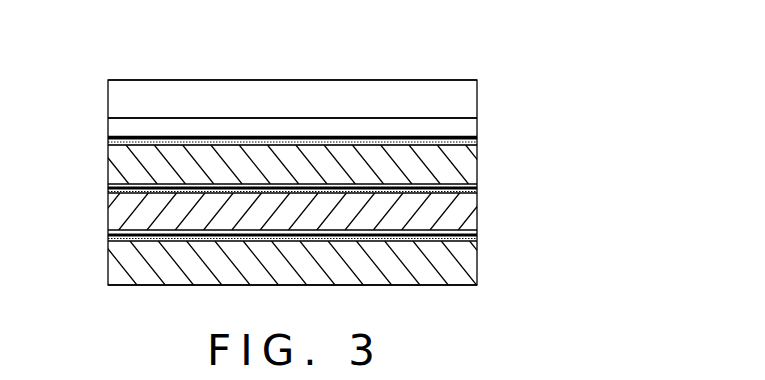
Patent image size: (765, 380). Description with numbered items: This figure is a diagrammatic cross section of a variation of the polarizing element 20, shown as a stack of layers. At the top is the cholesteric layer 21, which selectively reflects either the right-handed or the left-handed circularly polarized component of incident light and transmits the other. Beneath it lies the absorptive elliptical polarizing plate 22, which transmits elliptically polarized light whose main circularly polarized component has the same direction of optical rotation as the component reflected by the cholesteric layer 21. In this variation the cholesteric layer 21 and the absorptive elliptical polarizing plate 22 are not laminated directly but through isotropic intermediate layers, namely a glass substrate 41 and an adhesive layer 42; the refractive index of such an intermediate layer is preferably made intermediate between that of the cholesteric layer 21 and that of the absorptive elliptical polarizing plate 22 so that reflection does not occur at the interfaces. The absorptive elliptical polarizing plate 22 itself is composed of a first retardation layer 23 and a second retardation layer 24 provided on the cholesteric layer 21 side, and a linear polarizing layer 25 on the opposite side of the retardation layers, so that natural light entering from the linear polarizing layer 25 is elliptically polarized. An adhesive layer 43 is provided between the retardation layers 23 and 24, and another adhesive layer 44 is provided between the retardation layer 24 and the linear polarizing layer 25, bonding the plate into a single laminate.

The polarizing element 20 is at (459, 60).
The cholesteric layer 21 is at (470, 100).
The glass substrate 41 is at (470, 130).
The adhesive layer 42 is at (107, 140).
The retardation layer 23 is at (465, 163).
The adhesive layer 43 is at (107, 187).
The retardation layer 24 is at (465, 209).
The adhesive layer 44 is at (107, 235).
The linear polarizing layer 25 is at (465, 255).
The absorptive elliptical polarizing plate 22 is at (542, 165).